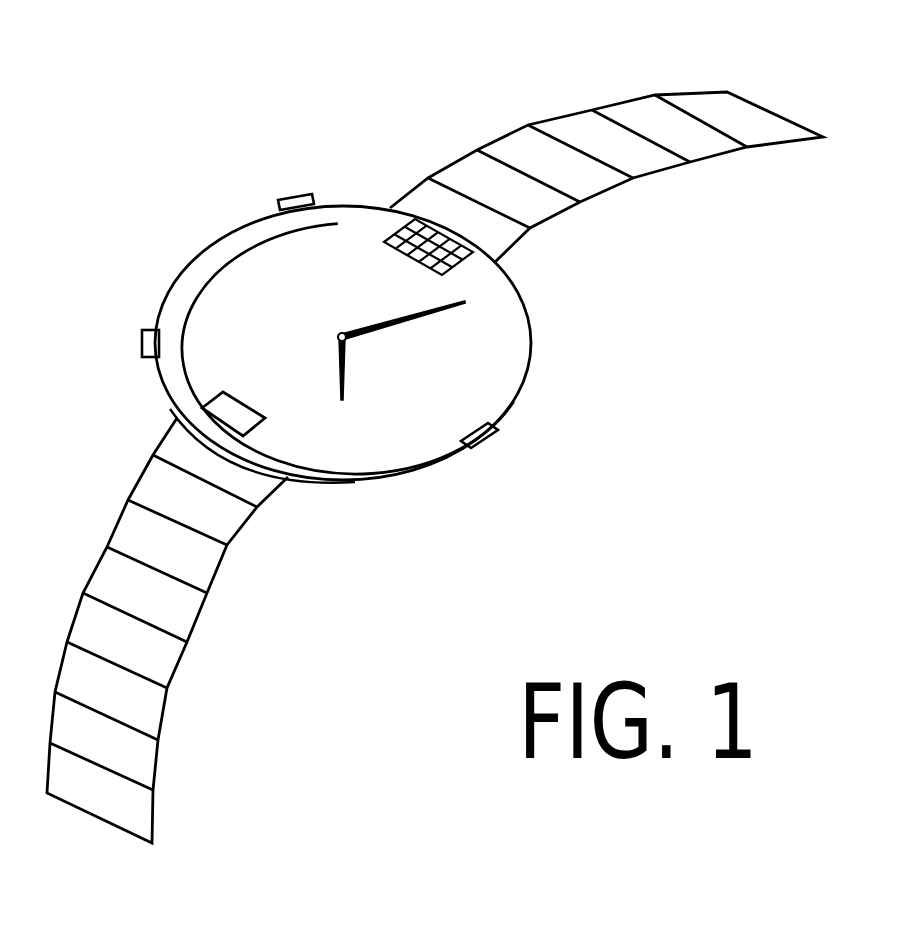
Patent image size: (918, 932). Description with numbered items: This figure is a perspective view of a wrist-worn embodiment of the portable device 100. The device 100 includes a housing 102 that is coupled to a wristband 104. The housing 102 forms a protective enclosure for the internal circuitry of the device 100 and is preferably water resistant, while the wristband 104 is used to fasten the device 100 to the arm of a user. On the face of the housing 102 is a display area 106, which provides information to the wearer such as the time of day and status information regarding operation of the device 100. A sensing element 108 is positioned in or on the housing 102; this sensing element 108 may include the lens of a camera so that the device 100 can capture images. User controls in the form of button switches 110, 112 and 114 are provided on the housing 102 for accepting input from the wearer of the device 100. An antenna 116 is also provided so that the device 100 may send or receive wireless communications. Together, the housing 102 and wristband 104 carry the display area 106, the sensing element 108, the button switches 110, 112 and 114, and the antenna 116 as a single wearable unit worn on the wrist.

The portable device 100 is at (184, 82).
The housing 102 is at (350, 482).
The wristband 104 is at (643, 177).
The display area 106 is at (455, 397).
The sensing element 108 is at (407, 262).
The button switch 110 is at (487, 440).
The button switch 112 is at (142, 342).
The button switch 114 is at (293, 195).
The antenna 116 is at (195, 297).